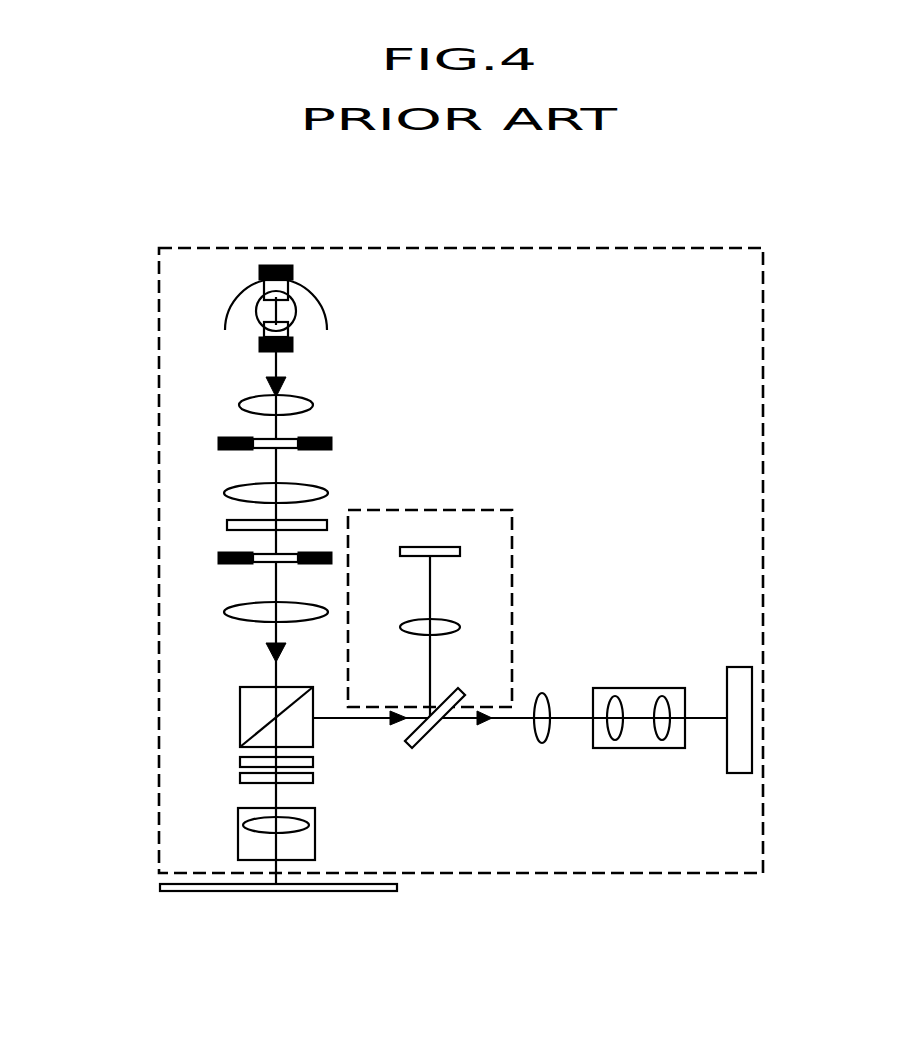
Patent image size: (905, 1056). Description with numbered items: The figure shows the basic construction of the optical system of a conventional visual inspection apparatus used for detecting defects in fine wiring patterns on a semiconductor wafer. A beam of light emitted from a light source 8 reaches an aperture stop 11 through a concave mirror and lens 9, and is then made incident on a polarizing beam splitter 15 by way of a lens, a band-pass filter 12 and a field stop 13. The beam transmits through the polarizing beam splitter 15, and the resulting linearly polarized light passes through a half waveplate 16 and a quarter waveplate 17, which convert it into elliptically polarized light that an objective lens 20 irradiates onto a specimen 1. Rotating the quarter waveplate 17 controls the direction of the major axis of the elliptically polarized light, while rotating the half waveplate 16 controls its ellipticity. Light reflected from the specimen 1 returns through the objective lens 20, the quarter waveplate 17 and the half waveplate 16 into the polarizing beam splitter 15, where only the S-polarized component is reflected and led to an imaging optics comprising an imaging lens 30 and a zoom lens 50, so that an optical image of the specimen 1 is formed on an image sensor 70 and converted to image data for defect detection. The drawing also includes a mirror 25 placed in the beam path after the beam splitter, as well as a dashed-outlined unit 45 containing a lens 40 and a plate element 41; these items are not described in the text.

The specimen 1 is at (160, 891).
The light source 8 is at (263, 265).
The lens 9 is at (243, 402).
The aperture stop 11 is at (218, 443).
The band-pass filter 12 is at (227, 523).
The field stop 13 is at (218, 560).
The polarizing beam splitter 15 is at (240, 717).
The half waveplate 16 is at (240, 760).
The quarter waveplate 17 is at (240, 778).
The objective lens 20 is at (238, 838).
The mirror 25 is at (433, 723).
The imaging lens 30 is at (542, 693).
The lens 40 is at (455, 623).
The detector / reflecting plate 41 is at (460, 551).
The detection unit 45 is at (468, 508).
The zoom lens 50 is at (642, 748).
The image sensor 70 is at (728, 778).